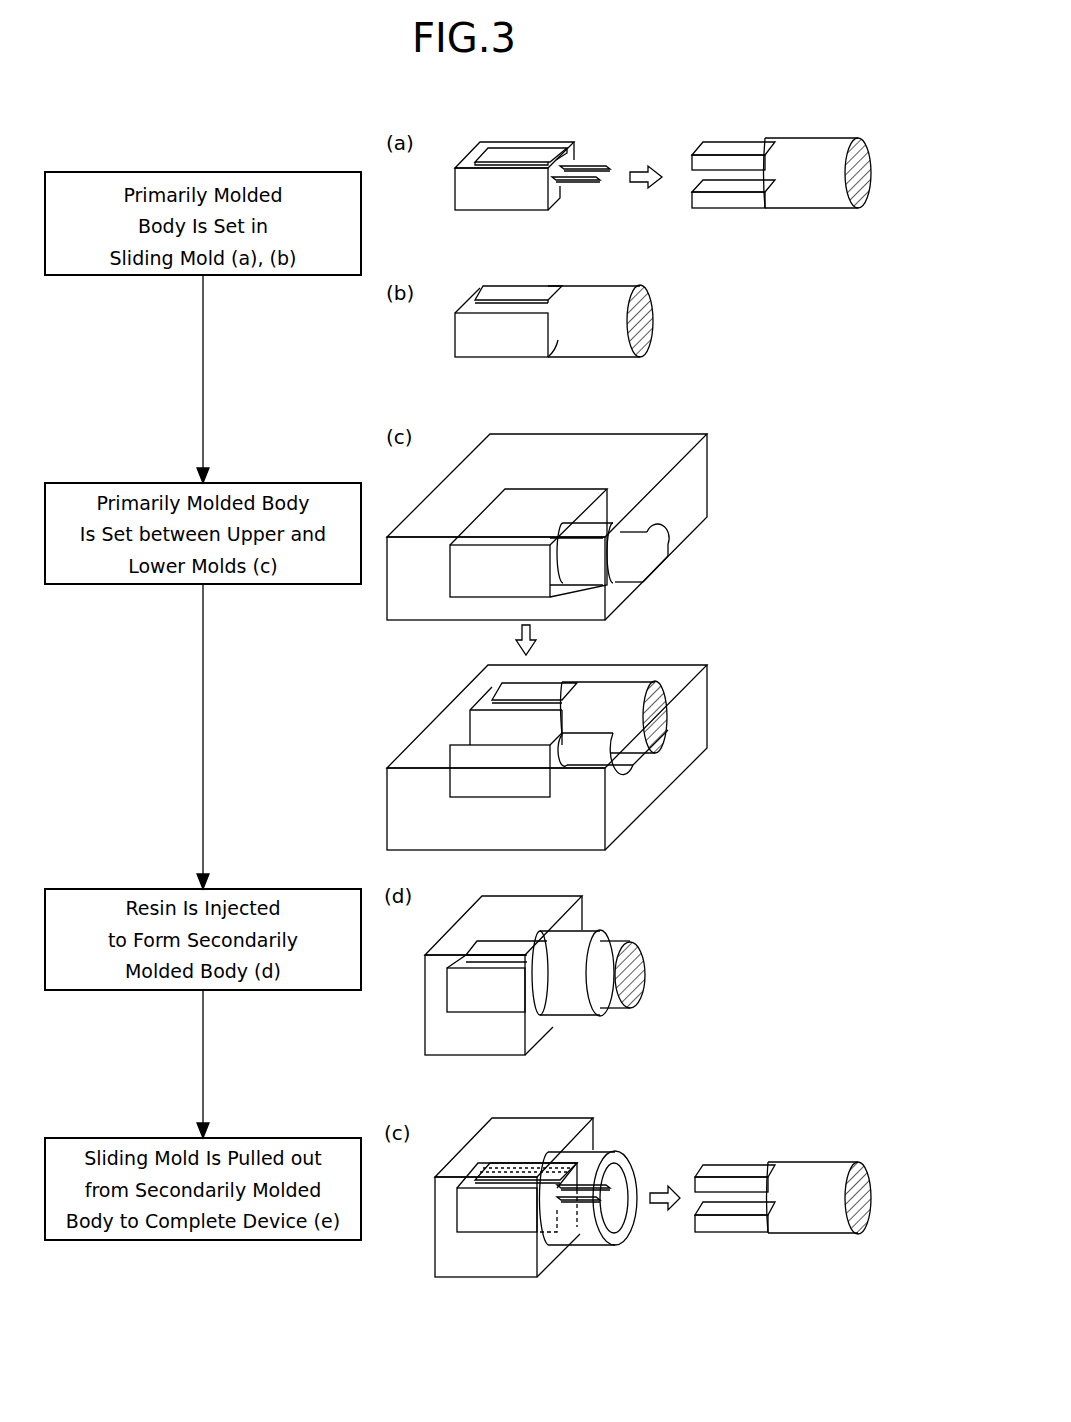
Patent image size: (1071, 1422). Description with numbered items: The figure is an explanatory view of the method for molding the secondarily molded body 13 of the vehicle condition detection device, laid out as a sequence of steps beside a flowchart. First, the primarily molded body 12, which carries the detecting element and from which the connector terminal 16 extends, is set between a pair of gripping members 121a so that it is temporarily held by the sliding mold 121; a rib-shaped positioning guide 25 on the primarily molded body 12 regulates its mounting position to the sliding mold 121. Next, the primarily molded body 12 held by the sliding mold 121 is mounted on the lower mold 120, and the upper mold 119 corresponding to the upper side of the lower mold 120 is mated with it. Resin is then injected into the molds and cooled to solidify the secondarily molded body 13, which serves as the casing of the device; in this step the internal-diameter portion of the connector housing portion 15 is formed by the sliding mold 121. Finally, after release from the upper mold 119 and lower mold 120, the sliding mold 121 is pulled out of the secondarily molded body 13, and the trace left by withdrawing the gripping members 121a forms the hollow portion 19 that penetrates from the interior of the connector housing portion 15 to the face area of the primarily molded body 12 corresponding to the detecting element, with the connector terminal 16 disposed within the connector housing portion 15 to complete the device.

The primarily molded body 12 is at (465, 190).
The secondarily molded body 13 is at (472, 922).
The connector housing portion 15 is at (615, 930).
The connector terminal 16 is at (592, 165).
The hollow portion 19 is at (518, 1165).
The positioning guide 25 is at (512, 140).
The upper mold 119 is at (683, 438).
The lower mold 120 is at (700, 700).
The sliding mold 121 is at (815, 195).
The gripping member 121a is at (737, 147).